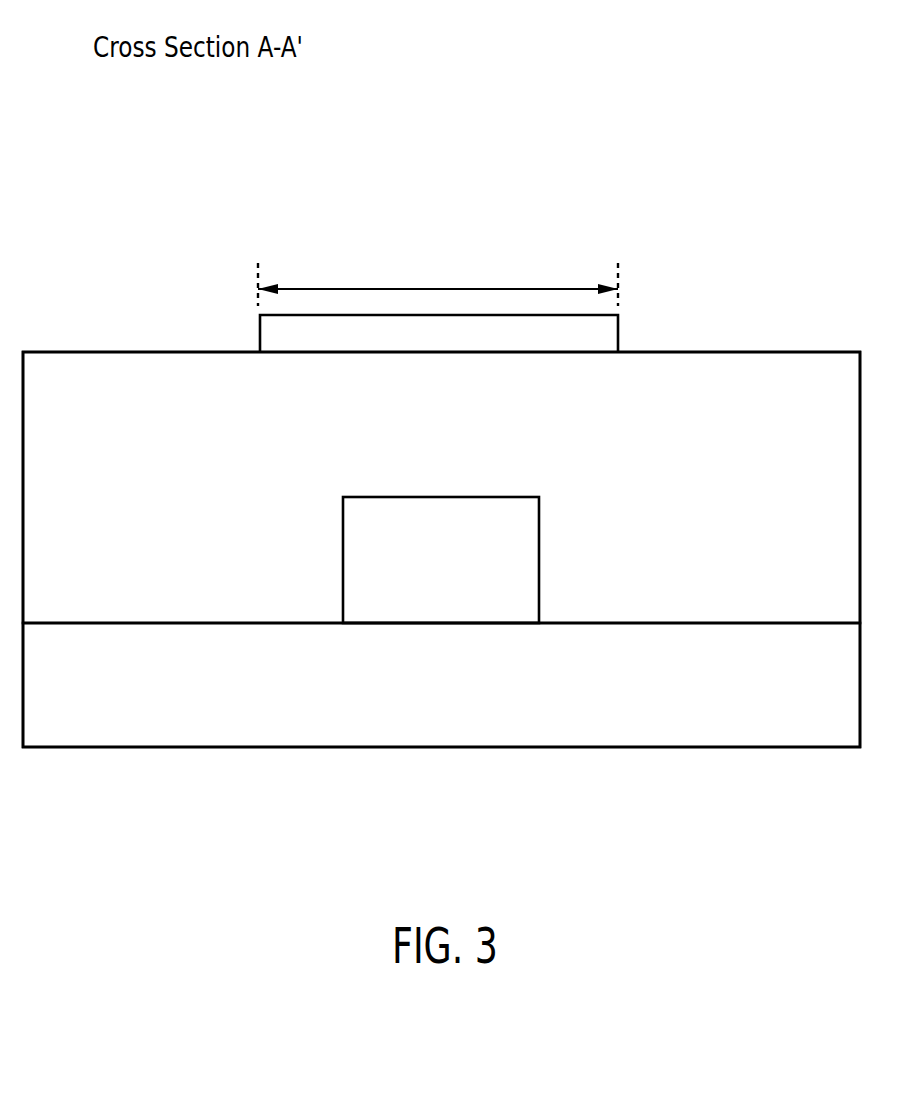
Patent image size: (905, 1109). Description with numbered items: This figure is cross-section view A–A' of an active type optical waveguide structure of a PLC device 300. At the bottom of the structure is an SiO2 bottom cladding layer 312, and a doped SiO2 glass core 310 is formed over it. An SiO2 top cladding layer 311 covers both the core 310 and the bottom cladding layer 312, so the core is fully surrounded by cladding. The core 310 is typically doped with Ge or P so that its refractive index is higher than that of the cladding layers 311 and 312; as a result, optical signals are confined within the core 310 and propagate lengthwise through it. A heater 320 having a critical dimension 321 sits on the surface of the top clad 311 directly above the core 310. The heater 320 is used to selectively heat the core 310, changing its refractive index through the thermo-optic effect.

The PLC device 300 is at (457, 138).
The core 310 is at (441, 560).
The top cladding layer 311 is at (441, 487).
The bottom cladding layer 312 is at (441, 685).
The heater 320 is at (439, 333).
The critical dimension 321 is at (442, 288).